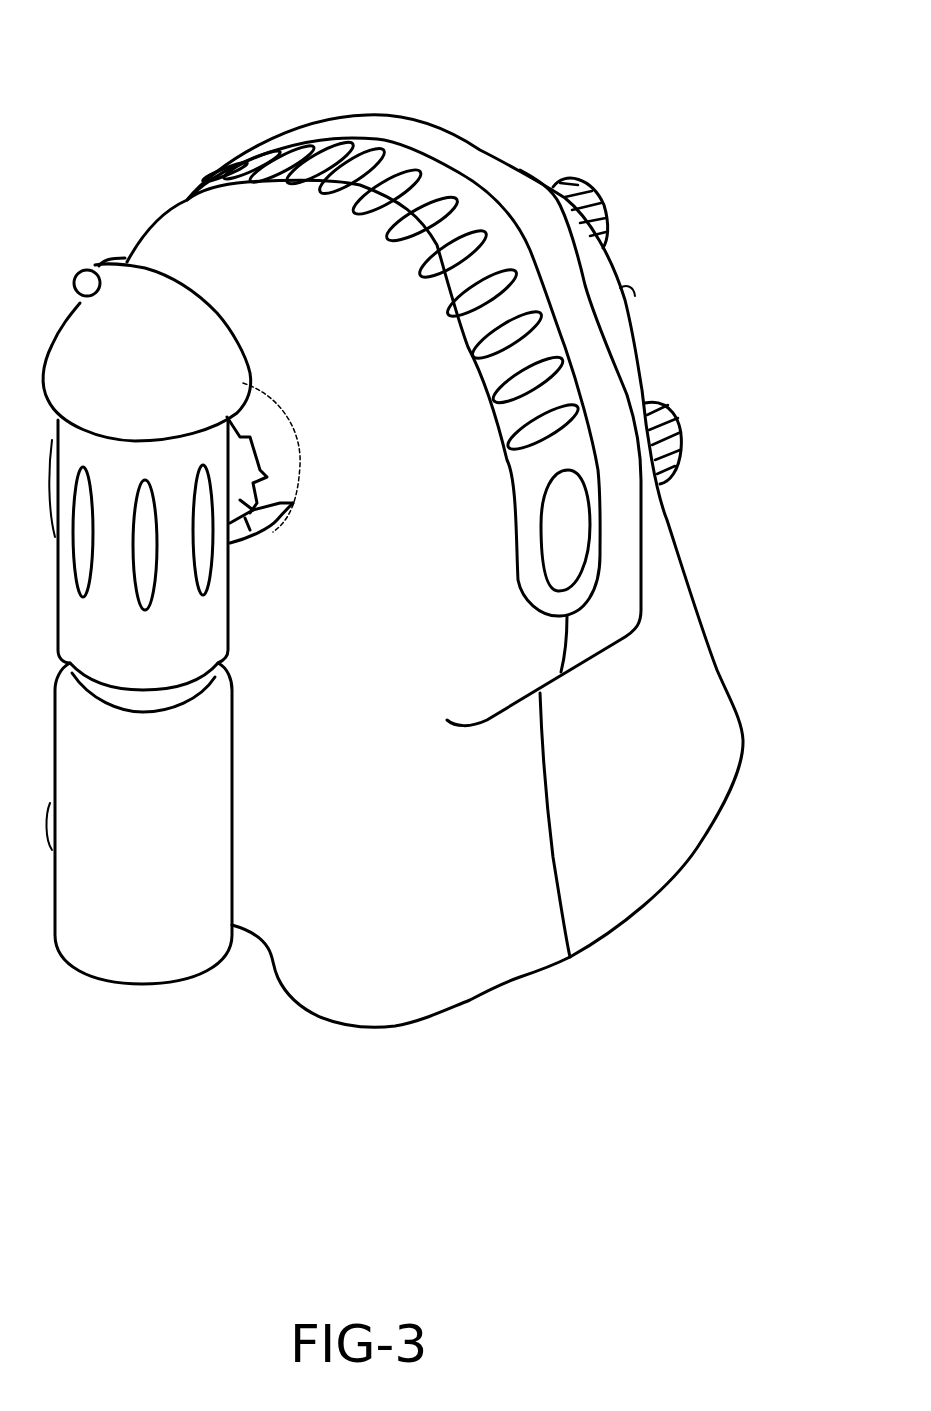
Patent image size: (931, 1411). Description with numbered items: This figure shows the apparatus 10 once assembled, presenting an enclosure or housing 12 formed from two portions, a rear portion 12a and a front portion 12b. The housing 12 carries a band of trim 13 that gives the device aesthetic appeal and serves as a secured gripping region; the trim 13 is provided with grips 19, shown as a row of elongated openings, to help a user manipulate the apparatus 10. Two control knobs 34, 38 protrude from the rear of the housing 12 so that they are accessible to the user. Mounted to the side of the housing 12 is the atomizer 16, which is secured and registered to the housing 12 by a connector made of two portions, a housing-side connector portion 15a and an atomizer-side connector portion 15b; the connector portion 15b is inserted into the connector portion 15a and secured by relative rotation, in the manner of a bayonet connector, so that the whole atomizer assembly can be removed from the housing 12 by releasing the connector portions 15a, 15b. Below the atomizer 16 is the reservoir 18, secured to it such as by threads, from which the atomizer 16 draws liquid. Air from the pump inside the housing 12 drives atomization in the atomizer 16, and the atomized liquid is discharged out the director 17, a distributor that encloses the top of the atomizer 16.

The apparatus 10 is at (533, 131).
The housing 12 is at (533, 978).
The rear portion 12a is at (662, 757).
The front portion 12b is at (408, 868).
The trim 13 is at (235, 159).
The grips 19 is at (370, 152).
The control knob 38 is at (597, 197).
The control knob 34 is at (680, 427).
The director 17 is at (160, 403).
The atomizer 16 is at (190, 628).
The reservoir 18 is at (150, 898).
The connector portion 15a is at (277, 460).
The connector portion 15b is at (240, 498).